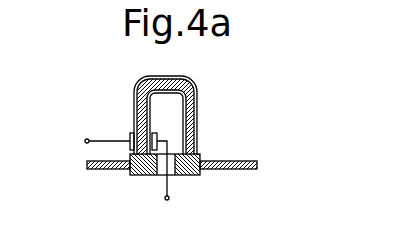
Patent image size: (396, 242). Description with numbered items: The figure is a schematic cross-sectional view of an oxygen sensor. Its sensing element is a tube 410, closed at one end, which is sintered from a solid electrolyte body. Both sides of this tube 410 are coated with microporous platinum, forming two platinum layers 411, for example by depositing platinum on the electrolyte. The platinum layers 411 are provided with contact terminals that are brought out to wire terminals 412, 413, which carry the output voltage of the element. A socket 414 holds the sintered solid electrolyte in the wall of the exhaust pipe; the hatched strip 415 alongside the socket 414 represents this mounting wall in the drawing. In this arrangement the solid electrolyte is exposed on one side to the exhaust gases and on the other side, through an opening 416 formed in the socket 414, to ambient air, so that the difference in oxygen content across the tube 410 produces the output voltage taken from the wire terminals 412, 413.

The tube 410 is at (192, 80).
The platinum layers 411 is at (176, 111).
The wire terminal 412 is at (86, 139).
The wire terminal 413 is at (165, 200).
The socket 414 is at (198, 153).
The substrate strip 415 is at (249, 172).
The opening 416 is at (172, 167).